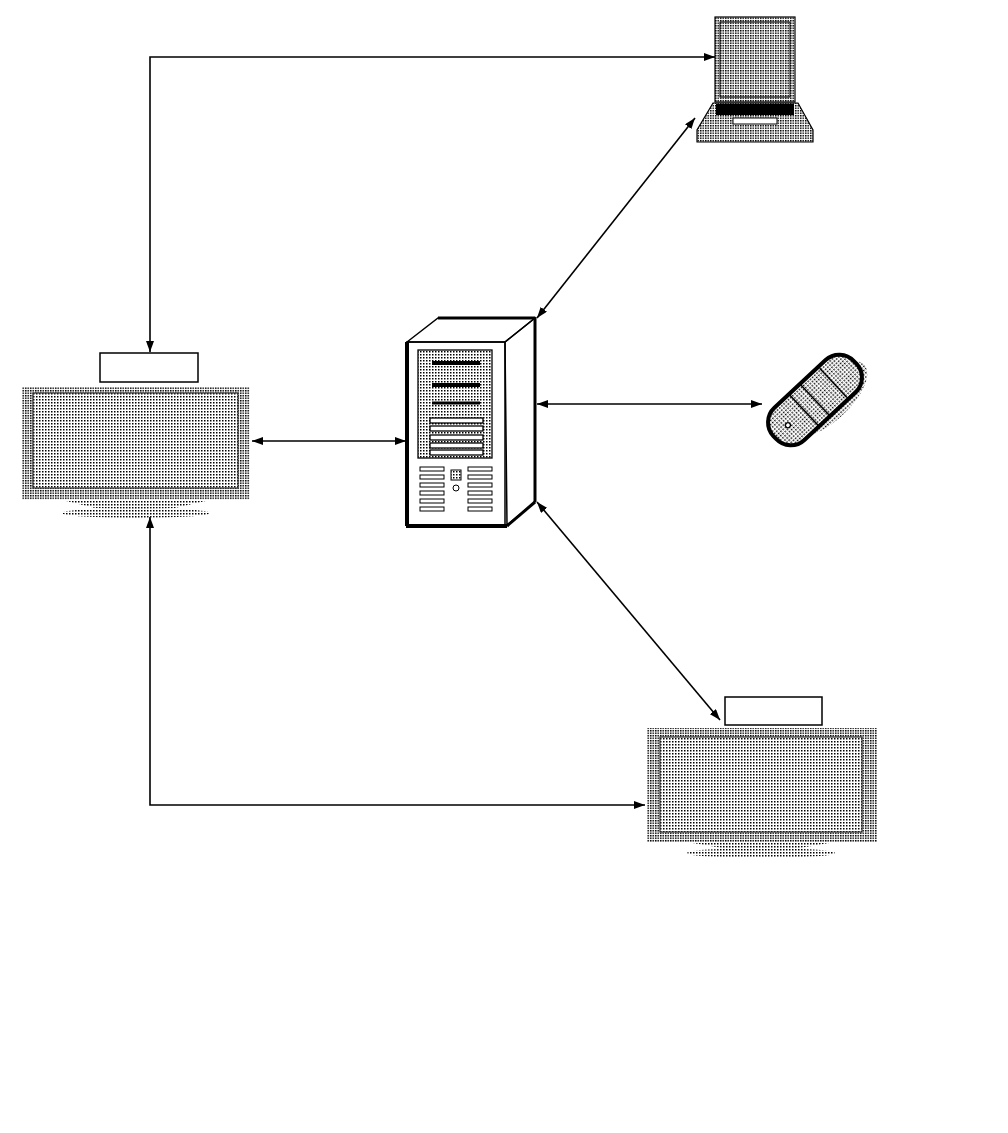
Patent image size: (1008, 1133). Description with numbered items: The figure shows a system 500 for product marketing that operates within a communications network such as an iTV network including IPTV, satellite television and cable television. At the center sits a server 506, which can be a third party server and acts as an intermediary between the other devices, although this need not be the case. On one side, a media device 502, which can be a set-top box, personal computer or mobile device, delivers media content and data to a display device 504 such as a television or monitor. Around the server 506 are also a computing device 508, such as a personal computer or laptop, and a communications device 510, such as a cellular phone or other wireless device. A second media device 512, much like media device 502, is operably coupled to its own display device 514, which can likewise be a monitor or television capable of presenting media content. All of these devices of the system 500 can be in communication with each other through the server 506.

The system 500 is at (475, 1060).
The media device 502 is at (149, 367).
The display device 504 is at (136, 452).
The server 506 is at (470, 449).
The computing device 508 is at (755, 102).
The communications device 510 is at (820, 422).
The media device 512 is at (773, 694).
The display device 514 is at (762, 793).